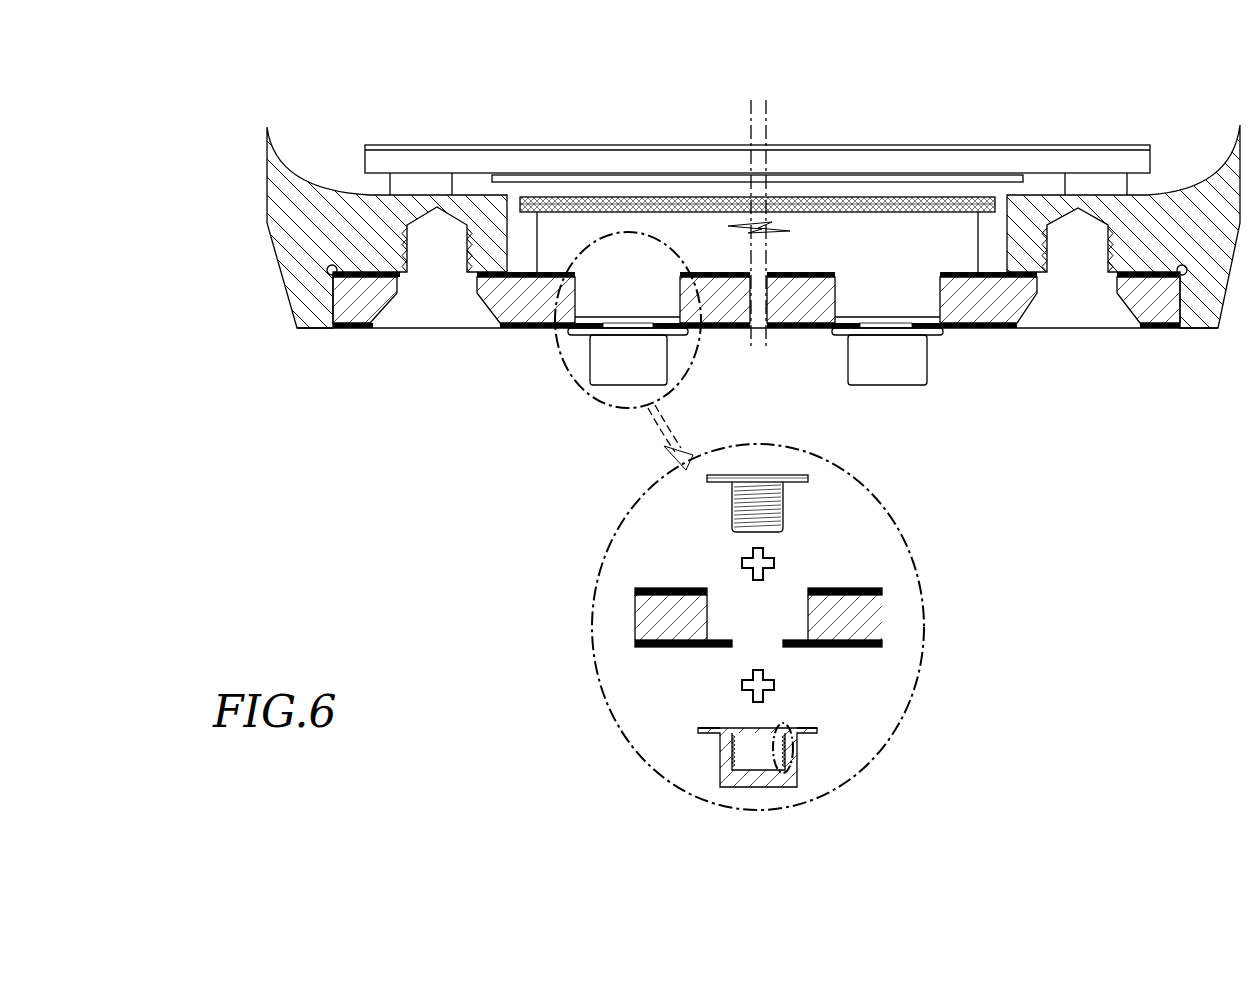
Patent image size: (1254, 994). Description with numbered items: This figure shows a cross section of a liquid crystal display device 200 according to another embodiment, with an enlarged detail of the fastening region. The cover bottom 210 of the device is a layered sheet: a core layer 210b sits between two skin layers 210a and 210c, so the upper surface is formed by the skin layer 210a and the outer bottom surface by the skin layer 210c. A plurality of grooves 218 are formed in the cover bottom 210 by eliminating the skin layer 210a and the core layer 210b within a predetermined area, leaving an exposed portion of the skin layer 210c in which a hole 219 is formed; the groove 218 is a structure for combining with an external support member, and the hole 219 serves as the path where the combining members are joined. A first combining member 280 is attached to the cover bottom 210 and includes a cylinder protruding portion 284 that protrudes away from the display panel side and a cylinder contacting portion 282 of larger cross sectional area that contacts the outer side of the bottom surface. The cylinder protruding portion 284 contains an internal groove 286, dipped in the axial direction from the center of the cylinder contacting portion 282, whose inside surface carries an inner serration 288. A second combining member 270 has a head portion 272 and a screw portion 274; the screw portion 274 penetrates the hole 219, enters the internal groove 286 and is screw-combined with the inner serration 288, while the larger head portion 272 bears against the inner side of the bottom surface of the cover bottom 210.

The liquid crystal display device 200 is at (305, 81).
The cover bottom 210 is at (1013, 662).
The skin layer 210a is at (882, 592).
The core layer 210b is at (880, 613).
The skin layer 210c is at (882, 645).
The groove 218 is at (953, 303).
The hole 219 is at (907, 333).
The second combining member 270 is at (583, 487).
The head portion 272 is at (710, 479).
The screw portion 274 is at (728, 518).
The first combining member 280 is at (897, 378).
The cylinder contacting portion 282 is at (817, 730).
The cylinder protruding portion 284 is at (797, 768).
The internal groove 286 is at (762, 767).
The inner serration 288 is at (797, 748).